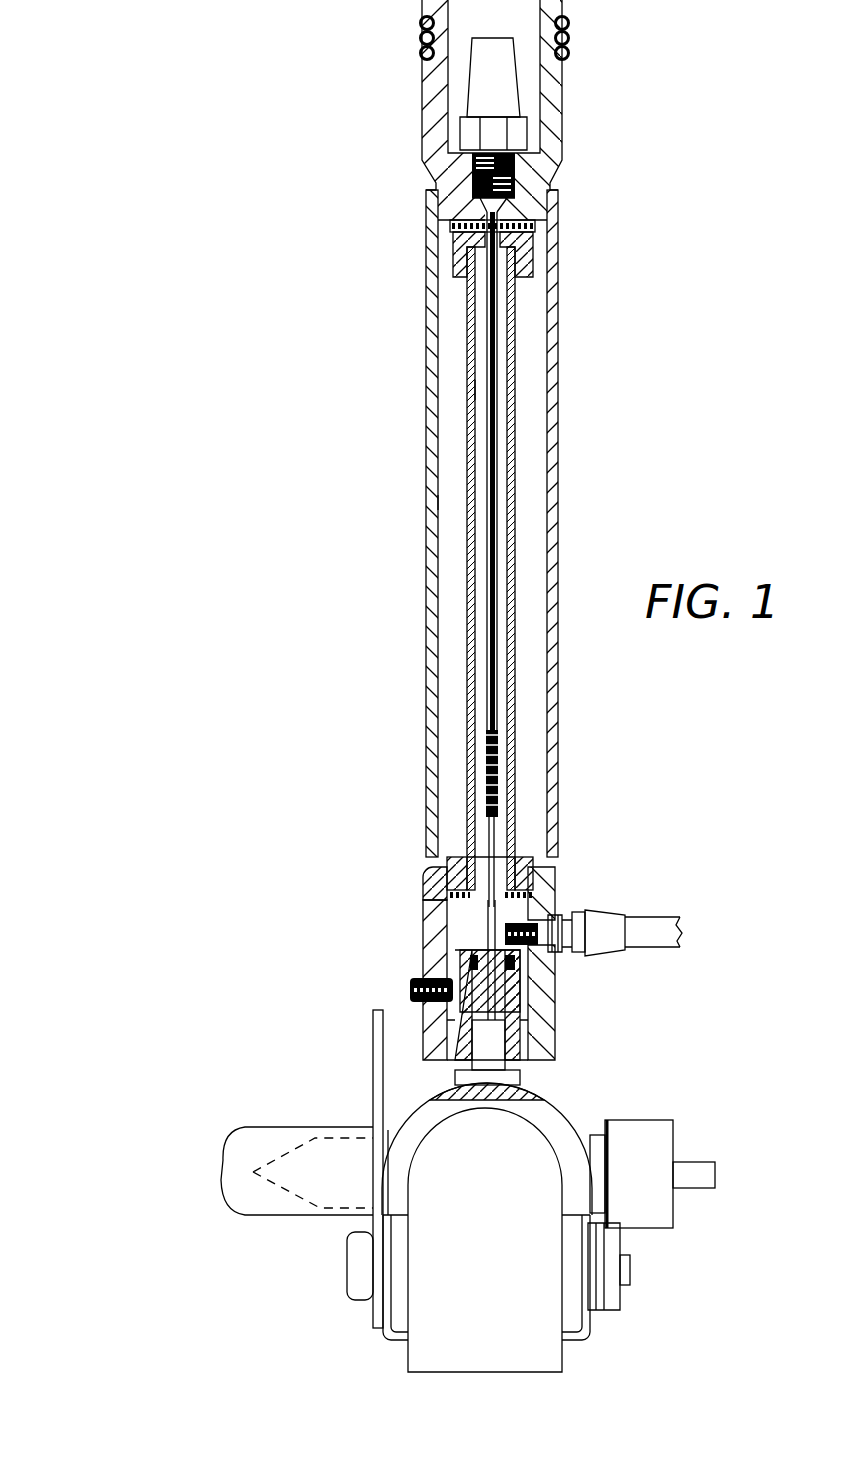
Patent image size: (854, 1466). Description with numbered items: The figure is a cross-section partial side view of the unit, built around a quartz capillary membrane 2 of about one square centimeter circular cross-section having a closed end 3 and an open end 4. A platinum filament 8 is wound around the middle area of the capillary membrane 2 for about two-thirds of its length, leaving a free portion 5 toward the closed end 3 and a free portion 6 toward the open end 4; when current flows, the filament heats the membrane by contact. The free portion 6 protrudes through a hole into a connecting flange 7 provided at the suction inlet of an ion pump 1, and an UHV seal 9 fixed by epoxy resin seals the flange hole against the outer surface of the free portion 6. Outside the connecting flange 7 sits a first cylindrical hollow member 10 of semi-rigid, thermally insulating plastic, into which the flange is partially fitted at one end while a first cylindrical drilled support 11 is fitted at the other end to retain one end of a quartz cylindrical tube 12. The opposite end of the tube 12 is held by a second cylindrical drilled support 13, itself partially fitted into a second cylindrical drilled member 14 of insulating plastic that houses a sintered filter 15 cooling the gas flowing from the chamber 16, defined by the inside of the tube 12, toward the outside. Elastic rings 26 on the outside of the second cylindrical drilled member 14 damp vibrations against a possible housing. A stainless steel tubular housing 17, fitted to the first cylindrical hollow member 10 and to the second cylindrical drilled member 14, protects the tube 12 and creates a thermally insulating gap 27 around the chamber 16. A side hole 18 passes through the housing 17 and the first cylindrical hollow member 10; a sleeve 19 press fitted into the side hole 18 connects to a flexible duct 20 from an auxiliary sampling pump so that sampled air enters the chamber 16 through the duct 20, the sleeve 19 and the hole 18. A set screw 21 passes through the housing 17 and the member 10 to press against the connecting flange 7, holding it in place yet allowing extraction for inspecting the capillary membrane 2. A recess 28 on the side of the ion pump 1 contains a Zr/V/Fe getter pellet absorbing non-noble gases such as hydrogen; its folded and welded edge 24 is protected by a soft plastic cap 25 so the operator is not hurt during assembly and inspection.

The ion pump 1 is at (405, 1353).
The quartz capillary membrane 2 is at (490, 542).
The closed end 3 is at (472, 196).
The open end 4 is at (498, 1012).
The free portion 5 is at (530, 268).
The free portion 6 is at (490, 977).
The connecting flange 7 is at (480, 937).
The platinum filament 8 is at (497, 775).
The UHV seal 9 is at (428, 895).
The first cylindrical hollow member 10 is at (538, 1037).
The first cylindrical drilled support 11 is at (533, 880).
The quartz cylindrical tube 12 is at (466, 652).
The second cylindrical drilled support 13 is at (455, 262).
The second cylindrical drilled member 14 is at (422, 88).
The sintered filter 15 is at (520, 97).
The chamber 16 is at (483, 392).
The tubular housing 17 is at (557, 428).
The side hole 18 is at (548, 912).
The sleeve 19 is at (582, 922).
The flexible duct 20 is at (658, 938).
The set screw 21 is at (412, 985).
The edge 24 is at (318, 1207).
The cap 25 is at (247, 1126).
The elastic rings 26 is at (420, 52).
The gap 27 is at (455, 503).
The recess 28 is at (348, 1165).